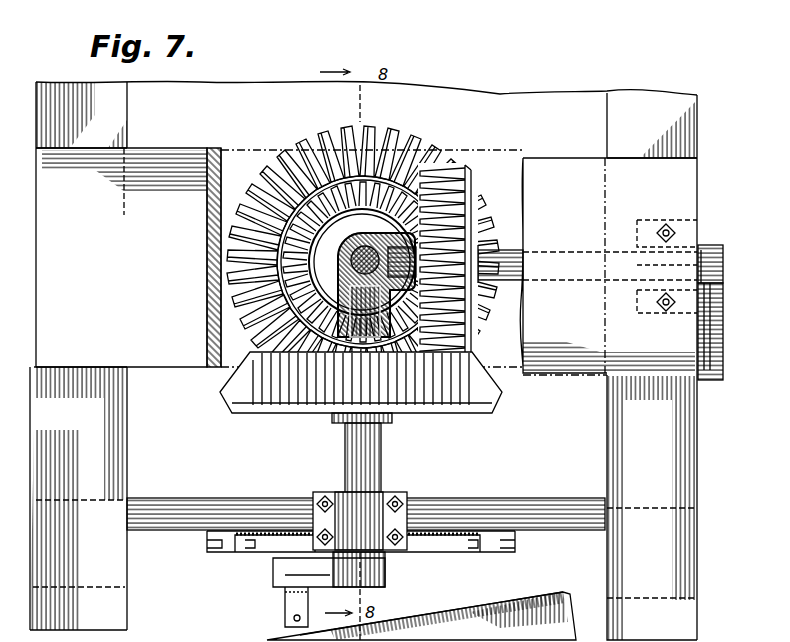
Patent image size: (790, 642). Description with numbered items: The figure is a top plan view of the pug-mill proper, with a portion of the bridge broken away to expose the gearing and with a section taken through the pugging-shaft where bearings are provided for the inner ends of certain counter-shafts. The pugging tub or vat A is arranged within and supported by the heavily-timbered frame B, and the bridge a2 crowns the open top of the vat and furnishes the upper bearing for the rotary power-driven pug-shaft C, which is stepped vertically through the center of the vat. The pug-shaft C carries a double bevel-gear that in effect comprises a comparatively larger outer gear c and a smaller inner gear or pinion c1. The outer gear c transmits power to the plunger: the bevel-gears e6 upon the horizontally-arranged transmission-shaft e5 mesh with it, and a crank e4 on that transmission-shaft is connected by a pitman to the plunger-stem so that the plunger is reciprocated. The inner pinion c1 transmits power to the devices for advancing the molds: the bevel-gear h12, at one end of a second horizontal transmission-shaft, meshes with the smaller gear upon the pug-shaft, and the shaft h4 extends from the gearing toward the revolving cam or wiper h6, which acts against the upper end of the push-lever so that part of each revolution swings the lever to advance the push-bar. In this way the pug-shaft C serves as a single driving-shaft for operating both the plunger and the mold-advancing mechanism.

The tub or vat A is at (366, 360).
The heavily-timbered frame B is at (78, 356).
The pug-shaft C is at (366, 285).
The outer gear c is at (440, 152).
The inner gear or pinion c1 is at (362, 262).
The bevel-gear h12 is at (478, 203).
The shaft h4 is at (587, 265).
The revolving cam or wiper h6 is at (728, 312).
The bridge a2 is at (608, 265).
The crank e4 is at (312, 589).
The transmission-shaft e5 is at (363, 458).
The bevel-gears e6 is at (361, 392).